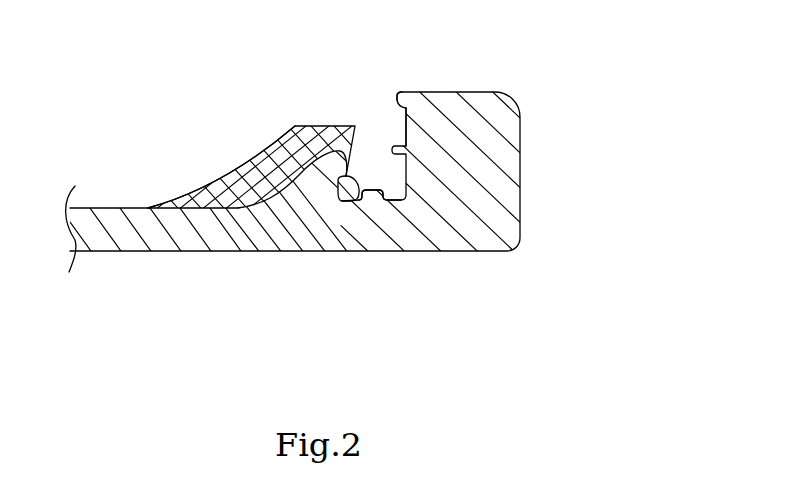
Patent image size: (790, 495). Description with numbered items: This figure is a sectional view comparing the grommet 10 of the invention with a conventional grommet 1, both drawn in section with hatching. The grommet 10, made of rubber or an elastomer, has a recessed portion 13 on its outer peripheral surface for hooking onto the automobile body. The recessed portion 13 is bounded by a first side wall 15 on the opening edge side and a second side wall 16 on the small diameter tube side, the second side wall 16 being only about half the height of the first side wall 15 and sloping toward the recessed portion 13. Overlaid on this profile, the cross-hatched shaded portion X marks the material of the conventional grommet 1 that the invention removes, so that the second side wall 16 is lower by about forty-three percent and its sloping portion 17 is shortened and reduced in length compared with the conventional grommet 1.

The conventional grommet 1 is at (332, 124).
The shaded portion X is at (253, 148).
The grommet 10 is at (533, 168).
The recessed portion 13 is at (376, 173).
The first side wall 15 is at (408, 130).
The second side wall 16 is at (352, 215).
The sloping portion 17 is at (320, 172).